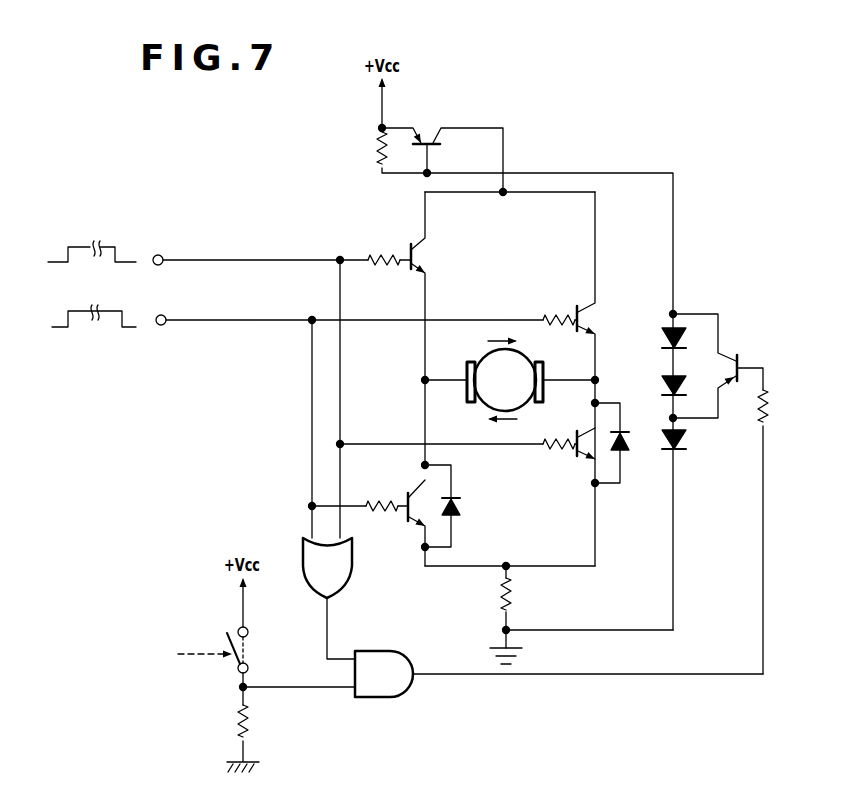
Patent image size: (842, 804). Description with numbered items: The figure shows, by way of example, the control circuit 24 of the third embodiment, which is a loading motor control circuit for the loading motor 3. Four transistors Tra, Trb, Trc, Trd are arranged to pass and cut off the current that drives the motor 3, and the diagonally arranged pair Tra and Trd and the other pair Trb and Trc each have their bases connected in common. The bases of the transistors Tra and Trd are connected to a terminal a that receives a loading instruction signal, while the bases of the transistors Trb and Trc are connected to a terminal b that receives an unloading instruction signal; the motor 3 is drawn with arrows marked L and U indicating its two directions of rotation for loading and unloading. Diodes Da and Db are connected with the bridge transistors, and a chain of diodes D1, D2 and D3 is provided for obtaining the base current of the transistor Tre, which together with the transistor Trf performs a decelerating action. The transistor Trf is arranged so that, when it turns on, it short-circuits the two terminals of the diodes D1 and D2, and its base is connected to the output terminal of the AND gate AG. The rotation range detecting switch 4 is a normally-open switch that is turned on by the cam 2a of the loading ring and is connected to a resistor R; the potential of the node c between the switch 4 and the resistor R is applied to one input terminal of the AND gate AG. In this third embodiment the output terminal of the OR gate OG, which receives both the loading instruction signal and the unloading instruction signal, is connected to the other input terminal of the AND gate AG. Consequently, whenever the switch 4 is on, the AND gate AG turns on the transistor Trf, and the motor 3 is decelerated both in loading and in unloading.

The control circuit 24 is at (241, 164).
The terminal a is at (158, 254).
The terminal b is at (160, 326).
The node c is at (247, 686).
The loading motor 3 is at (528, 357).
The rotation range detecting switch 4 is at (233, 666).
The cam 2a is at (188, 654).
The transistor Tra is at (418, 258).
The transistor Trb is at (583, 313).
The transistor Trc is at (410, 492).
The transistor Trd is at (576, 452).
The transistor Tre is at (427, 140).
The transistor Trf is at (739, 352).
The diode D1 is at (665, 336).
The diode D2 is at (679, 386).
The diode D3 is at (686, 438).
The diode Da is at (462, 505).
The diode Db is at (627, 440).
The OR gate OG is at (352, 563).
The AND gate AG is at (378, 650).
The motor rotation direction L is at (509, 344).
The motor rotation direction U is at (510, 429).
The resistor R is at (250, 721).